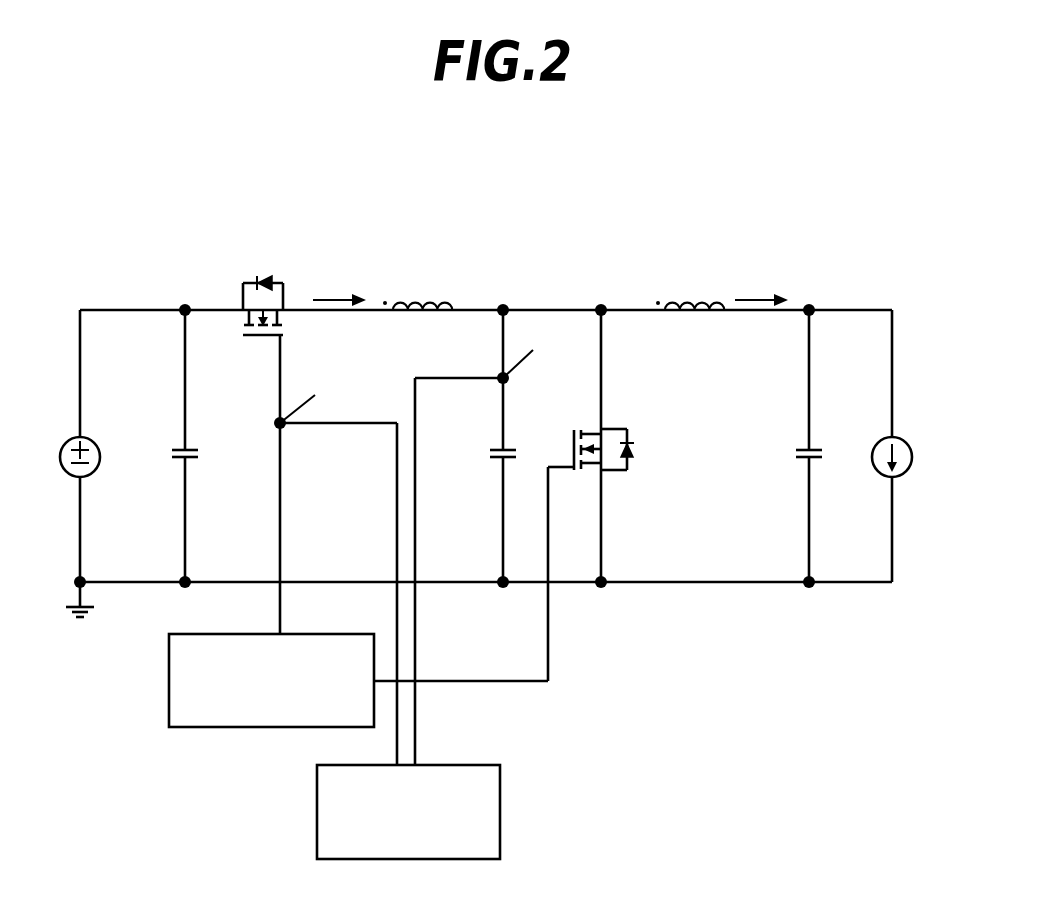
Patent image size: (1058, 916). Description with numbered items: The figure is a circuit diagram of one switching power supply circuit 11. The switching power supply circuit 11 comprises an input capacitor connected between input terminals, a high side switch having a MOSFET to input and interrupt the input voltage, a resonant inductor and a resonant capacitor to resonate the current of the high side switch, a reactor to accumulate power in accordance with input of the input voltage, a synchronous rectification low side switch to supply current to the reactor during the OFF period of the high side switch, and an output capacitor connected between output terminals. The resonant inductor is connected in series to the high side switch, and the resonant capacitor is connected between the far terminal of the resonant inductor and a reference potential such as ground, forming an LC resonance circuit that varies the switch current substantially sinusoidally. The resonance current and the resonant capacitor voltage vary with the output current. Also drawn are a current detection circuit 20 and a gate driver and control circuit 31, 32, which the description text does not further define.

The switching power supply circuit 11 is at (483, 249).
The current detection circuit 20 is at (500, 830).
The gate driver circuit 31 is at (188, 728).
The control circuit 32 is at (253, 729).